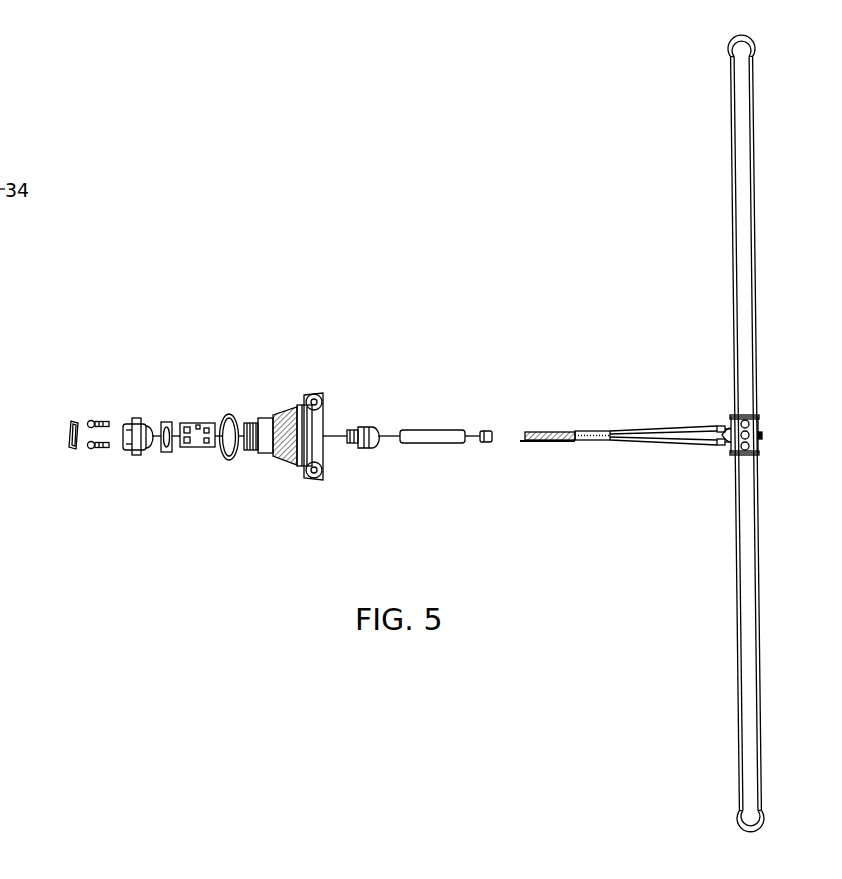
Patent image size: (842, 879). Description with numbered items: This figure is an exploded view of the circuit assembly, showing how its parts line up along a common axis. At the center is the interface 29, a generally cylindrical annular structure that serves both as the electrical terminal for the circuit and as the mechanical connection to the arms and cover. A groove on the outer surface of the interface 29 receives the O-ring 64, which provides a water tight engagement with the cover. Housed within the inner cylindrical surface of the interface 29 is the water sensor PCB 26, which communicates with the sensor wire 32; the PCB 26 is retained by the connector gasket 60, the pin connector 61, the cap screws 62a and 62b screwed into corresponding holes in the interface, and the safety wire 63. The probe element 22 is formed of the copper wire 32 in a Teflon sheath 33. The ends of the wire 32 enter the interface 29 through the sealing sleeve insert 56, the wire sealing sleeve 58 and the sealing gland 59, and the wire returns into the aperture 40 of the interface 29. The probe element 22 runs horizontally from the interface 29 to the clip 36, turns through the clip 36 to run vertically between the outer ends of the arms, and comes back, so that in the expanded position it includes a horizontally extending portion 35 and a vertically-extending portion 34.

The probe element 22 is at (590, 232).
The PCB 26 is at (190, 450).
The interface 29 is at (285, 405).
The wire 32 is at (540, 430).
The Teflon sheath 33 is at (601, 444).
The vertically-extending portion 34 is at (725, 236).
The horizontally extending portion 35 is at (636, 408).
The clip 36 is at (763, 421).
The aperture 40 is at (233, 452).
The sealing sleeve insert 56 is at (487, 447).
The wire sealing sleeve 58 is at (428, 420).
The sealing gland 59 is at (366, 449).
The connector gasket 60 is at (165, 413).
The pin connector 61 is at (135, 451).
The cap screw 62a is at (97, 412).
The cap screw 62b is at (97, 456).
The safety wire 63 is at (62, 437).
The O-ring 64 is at (224, 410).